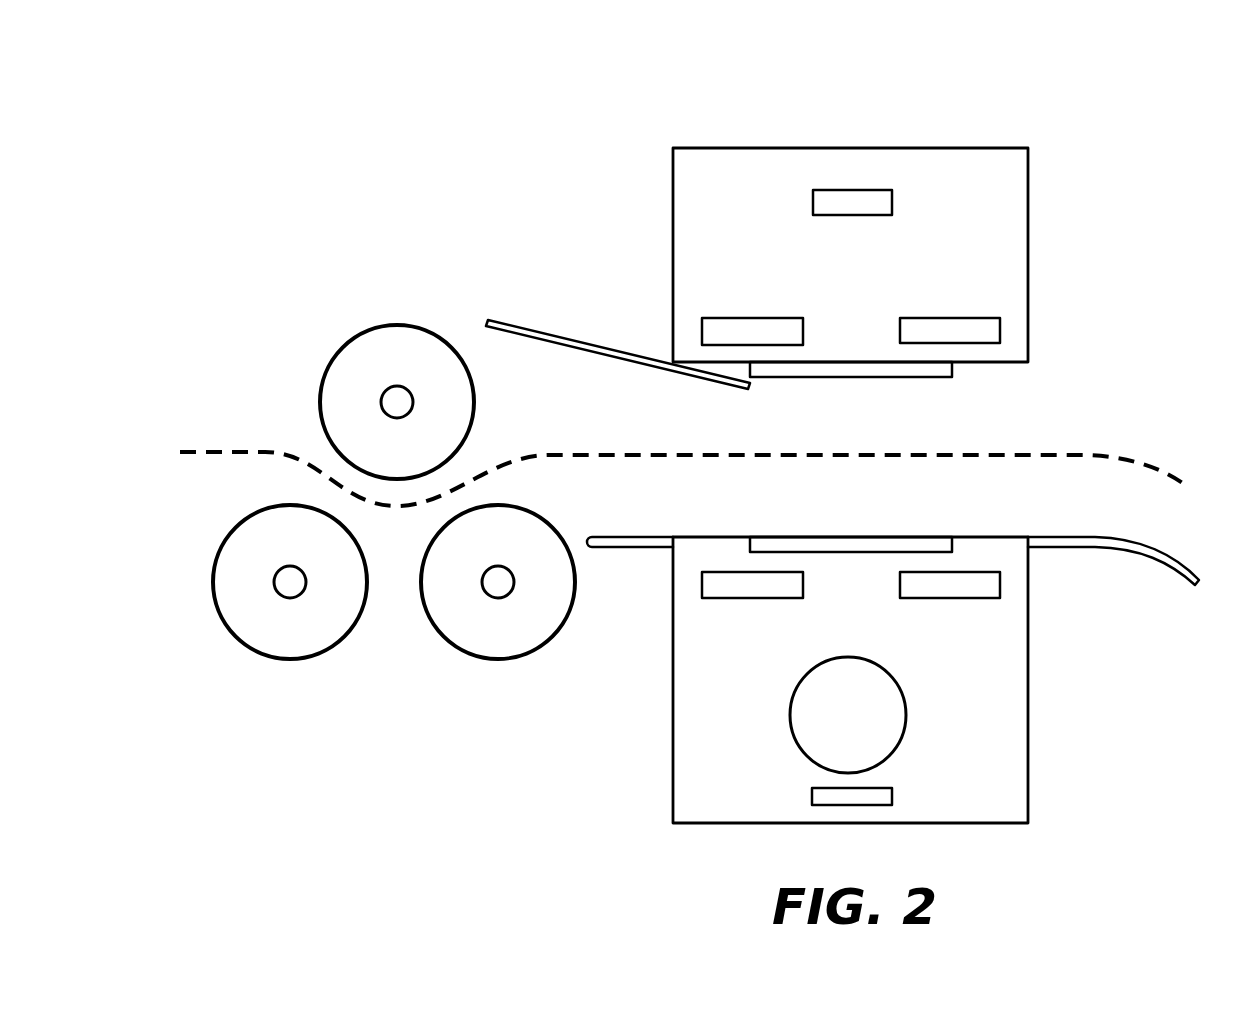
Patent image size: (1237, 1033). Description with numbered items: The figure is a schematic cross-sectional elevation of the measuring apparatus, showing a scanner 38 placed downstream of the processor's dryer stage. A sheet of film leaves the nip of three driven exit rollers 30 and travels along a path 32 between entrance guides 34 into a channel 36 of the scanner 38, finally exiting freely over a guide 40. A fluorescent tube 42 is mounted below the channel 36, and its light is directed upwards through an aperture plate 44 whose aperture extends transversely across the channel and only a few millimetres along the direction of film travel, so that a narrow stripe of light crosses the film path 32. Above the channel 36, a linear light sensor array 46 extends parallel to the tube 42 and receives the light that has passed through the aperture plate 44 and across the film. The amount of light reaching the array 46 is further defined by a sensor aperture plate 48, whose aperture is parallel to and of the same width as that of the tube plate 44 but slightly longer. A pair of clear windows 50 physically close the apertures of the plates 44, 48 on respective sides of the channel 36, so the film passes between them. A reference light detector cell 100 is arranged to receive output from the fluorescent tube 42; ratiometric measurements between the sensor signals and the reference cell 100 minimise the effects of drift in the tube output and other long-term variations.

The driven exit rollers 30 is at (400, 608).
The path 32 is at (553, 455).
The entrance guides 34 is at (518, 322).
The channel 36 is at (950, 413).
The scanner 38 is at (1056, 86).
The guide 40 is at (1114, 552).
The fluorescent tube 42 is at (905, 702).
The aperture plate 44 is at (770, 598).
The linear light sensor array 46 is at (850, 190).
The sensor aperture plate 48 is at (925, 318).
The clear windows 50 is at (920, 378).
The reference light detector cell 100 is at (895, 797).